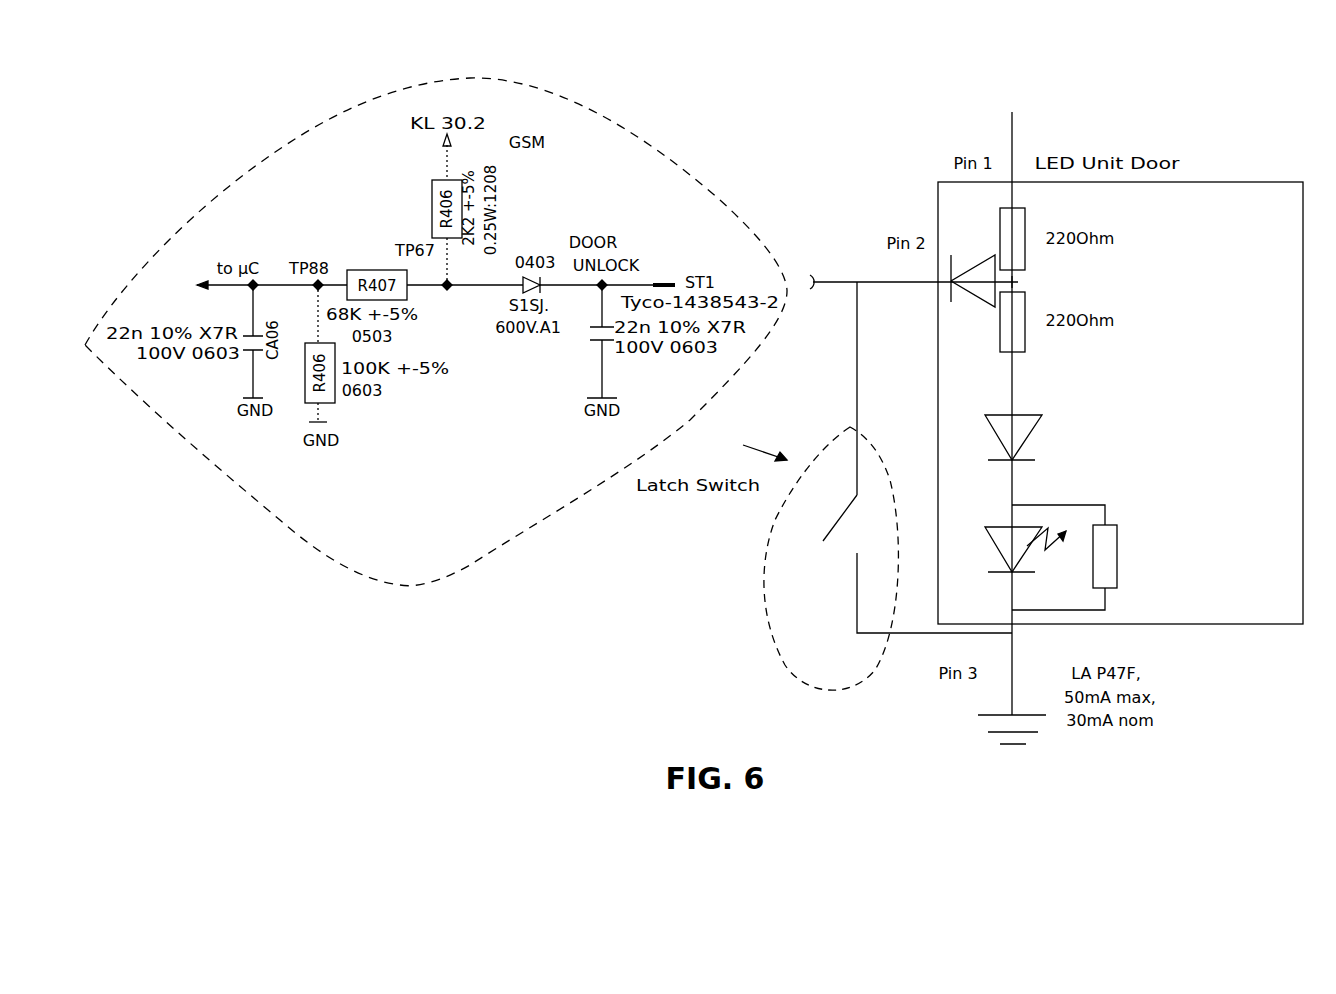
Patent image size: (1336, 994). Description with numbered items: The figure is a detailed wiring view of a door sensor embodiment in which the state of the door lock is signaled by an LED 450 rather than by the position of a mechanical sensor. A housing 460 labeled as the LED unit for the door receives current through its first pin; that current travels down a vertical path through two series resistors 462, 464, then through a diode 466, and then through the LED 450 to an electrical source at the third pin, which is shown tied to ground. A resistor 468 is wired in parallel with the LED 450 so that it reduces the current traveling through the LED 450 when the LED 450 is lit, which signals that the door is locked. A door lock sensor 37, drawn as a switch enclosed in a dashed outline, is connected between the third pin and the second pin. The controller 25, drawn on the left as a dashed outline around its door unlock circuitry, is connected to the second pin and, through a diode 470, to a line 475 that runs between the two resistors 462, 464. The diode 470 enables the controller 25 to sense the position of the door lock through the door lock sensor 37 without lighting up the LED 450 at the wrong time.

The controller 25 is at (643, 140).
The door lock sensor 37 is at (805, 455).
The LED 450 is at (995, 527).
The housing 460 is at (1232, 182).
The resistor 462 is at (1025, 255).
The resistor 464 is at (1025, 340).
The diode 466 is at (1030, 432).
The resistor 468 is at (1117, 558).
The diode 470 is at (975, 262).
The line 475 is at (1018, 282).